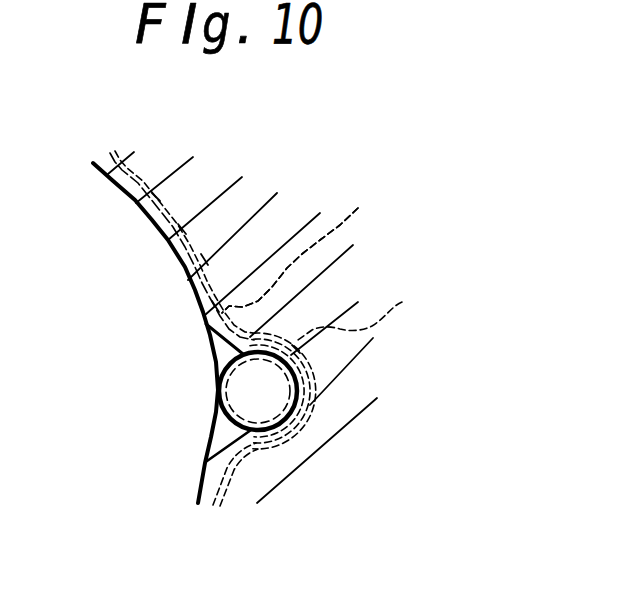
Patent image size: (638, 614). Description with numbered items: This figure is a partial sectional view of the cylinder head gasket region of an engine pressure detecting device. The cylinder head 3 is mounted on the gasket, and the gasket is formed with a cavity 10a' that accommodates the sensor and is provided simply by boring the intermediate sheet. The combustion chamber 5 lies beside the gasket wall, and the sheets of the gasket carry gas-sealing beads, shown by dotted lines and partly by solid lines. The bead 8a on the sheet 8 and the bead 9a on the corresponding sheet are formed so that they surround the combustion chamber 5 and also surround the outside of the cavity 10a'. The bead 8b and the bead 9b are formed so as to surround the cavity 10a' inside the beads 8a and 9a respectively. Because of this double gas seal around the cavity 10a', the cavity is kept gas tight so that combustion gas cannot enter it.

The cylinder head 3 is at (294, 199).
The combustion chamber 5 is at (50, 336).
The sheet 8 is at (246, 381).
The bead 8a is at (324, 245).
The bead 9a is at (290, 260).
The bead 8b is at (228, 428).
The bead 9b is at (322, 399).
The cavity 10a' is at (182, 252).